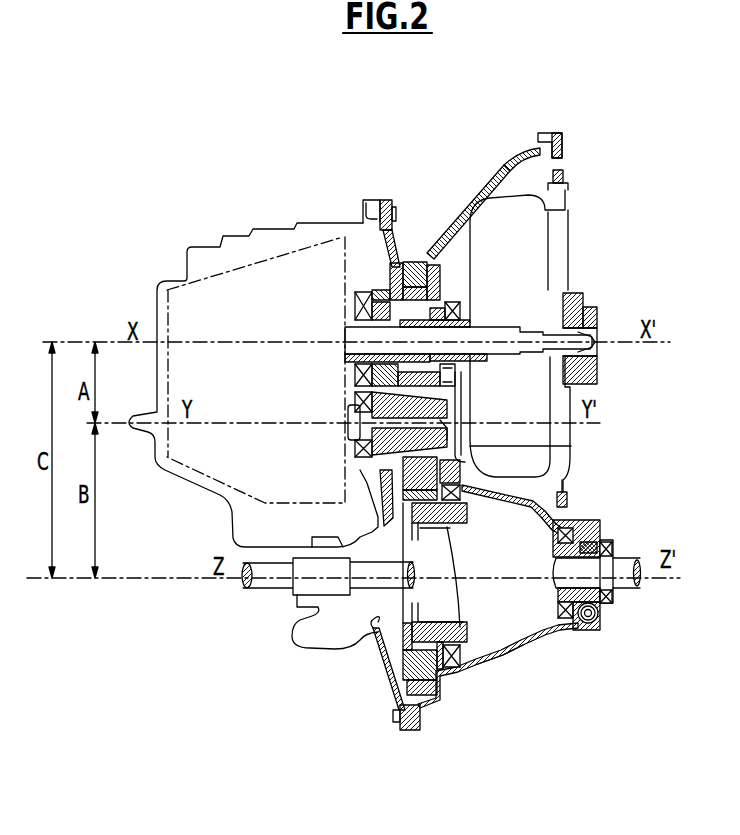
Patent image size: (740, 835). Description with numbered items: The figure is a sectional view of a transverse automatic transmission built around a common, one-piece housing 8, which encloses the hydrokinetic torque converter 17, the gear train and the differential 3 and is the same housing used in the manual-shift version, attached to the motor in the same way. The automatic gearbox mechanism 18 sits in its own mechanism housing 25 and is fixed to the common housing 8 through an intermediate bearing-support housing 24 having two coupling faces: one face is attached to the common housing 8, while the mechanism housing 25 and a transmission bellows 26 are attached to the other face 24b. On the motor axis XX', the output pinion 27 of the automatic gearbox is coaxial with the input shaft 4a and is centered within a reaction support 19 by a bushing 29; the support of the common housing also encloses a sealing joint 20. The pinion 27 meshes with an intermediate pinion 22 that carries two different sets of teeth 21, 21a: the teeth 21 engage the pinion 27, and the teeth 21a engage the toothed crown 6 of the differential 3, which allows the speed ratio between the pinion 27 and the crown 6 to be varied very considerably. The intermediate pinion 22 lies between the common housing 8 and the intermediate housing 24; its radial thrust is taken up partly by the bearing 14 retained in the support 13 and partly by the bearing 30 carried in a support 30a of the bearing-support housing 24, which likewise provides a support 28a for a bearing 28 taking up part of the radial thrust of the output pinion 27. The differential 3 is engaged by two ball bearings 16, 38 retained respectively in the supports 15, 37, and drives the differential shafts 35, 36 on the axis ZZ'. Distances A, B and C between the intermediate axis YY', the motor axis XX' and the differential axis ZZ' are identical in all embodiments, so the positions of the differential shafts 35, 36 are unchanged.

The differential 3 is at (515, 616).
The input shaft of the automatic gearbox 4a is at (530, 333).
The toothed crown of the differential 6 is at (405, 680).
The common housing 8 is at (516, 653).
The support 13 is at (560, 480).
The bearing 14 is at (532, 446).
The support 15 is at (455, 670).
The ball bearing 16 is at (450, 678).
The hydrokinetic torque converter 17 is at (535, 258).
The automatic gearbox mechanism 18 is at (235, 293).
The reaction support 19 is at (498, 326).
The sealing joint 20 is at (455, 371).
The teeth of intermediate pinion 21 is at (383, 471).
The teeth of intermediate pinion 21a is at (447, 424).
The intermediate pinion 22 is at (440, 410).
The intermediate bearing-support housing 24 is at (386, 200).
The coupling face 24b is at (383, 206).
The mechanism housing 25 is at (363, 222).
The transmission bellows 26 is at (310, 638).
The output pinion of the automatic gearbox 27 is at (348, 323).
The bearing 28 is at (350, 377).
The support 28a is at (358, 299).
The bushing 29 is at (419, 262).
The bearing 30 is at (350, 446).
The support 30a is at (352, 466).
The differential shaft 35 is at (267, 587).
The differential shaft 36 is at (630, 588).
The support 37 is at (575, 519).
The ball bearing 38 is at (572, 631).